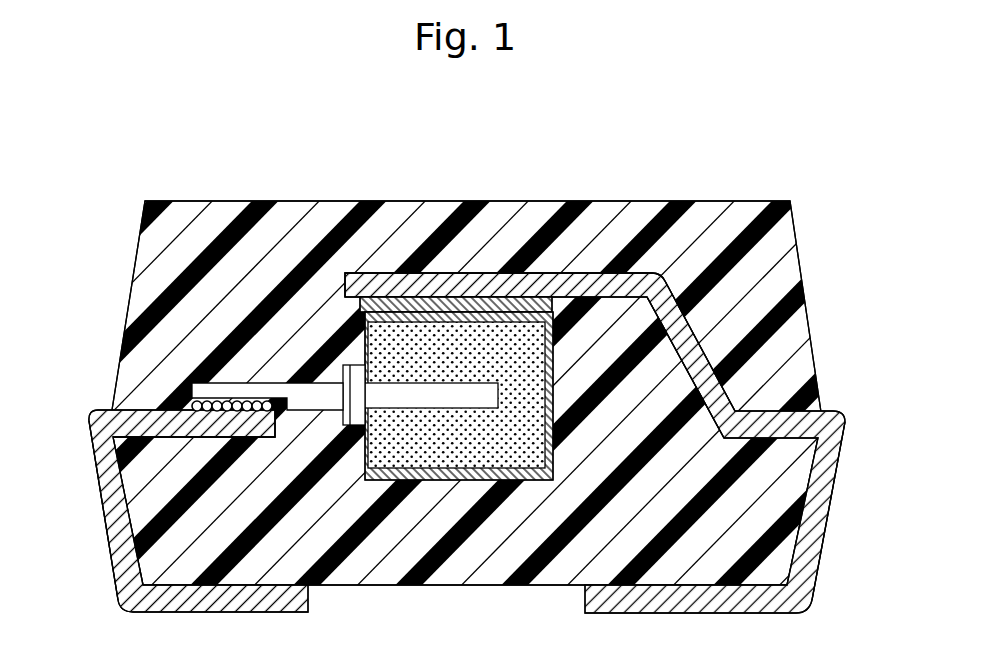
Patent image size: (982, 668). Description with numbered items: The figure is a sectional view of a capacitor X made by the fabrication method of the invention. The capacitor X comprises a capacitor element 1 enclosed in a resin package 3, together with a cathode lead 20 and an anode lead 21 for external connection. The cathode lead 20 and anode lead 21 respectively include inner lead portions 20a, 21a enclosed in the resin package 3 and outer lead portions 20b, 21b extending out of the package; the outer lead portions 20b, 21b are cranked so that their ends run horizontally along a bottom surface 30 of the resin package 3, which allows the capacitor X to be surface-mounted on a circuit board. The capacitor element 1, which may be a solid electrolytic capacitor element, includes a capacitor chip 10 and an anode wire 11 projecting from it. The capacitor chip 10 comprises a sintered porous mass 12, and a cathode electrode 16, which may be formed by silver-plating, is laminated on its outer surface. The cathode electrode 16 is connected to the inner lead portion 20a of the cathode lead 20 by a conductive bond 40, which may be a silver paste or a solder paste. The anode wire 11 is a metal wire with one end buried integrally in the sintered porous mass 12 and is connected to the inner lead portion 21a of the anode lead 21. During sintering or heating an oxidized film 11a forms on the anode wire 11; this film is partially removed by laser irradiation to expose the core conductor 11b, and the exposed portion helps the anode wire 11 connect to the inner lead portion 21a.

The capacitor X is at (606, 172).
The capacitor element 1 is at (406, 468).
The resin package 3 is at (800, 251).
The capacitor chip 10 is at (490, 426).
The anode wire 11 is at (267, 399).
The oxidized film 11a is at (318, 403).
The core conductor 11b is at (247, 413).
The sintered porous mass 12 is at (442, 448).
The cathode electrode 16 is at (554, 351).
The cathode lead 20 is at (845, 409).
The inner lead portion 20a is at (718, 437).
The outer lead portion 20b is at (830, 530).
The anode lead 21 is at (94, 405).
The inner lead portion 21a is at (157, 438).
The outer lead portion 21b is at (115, 537).
The bottom surface 30 is at (392, 586).
The conductive bond 40 is at (430, 298).